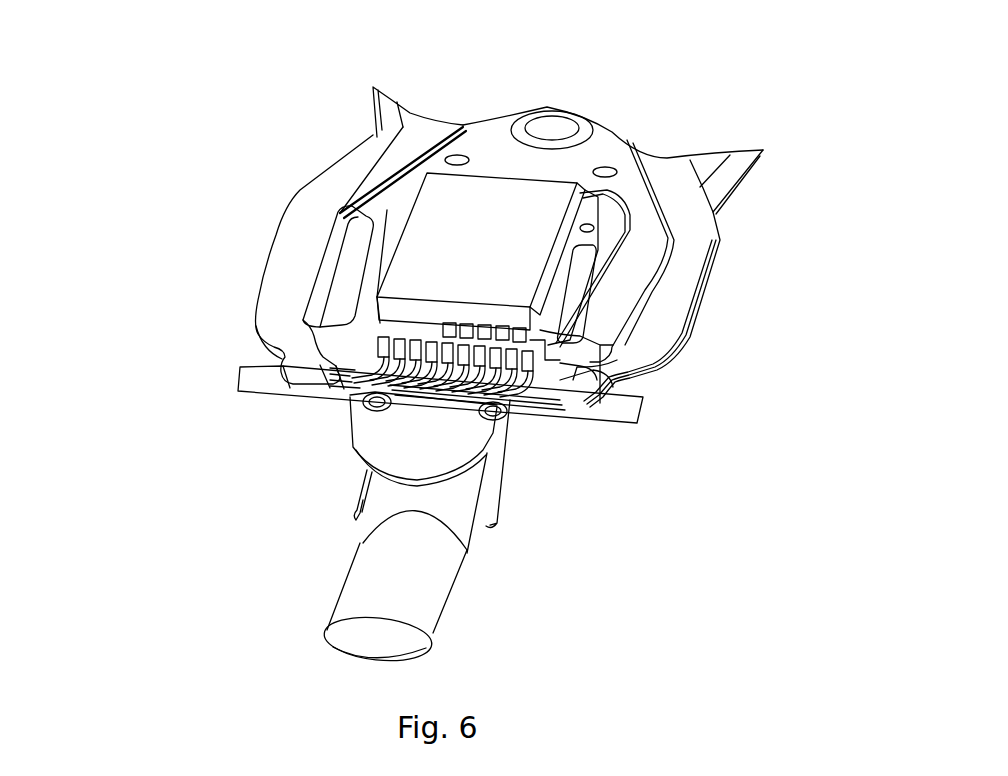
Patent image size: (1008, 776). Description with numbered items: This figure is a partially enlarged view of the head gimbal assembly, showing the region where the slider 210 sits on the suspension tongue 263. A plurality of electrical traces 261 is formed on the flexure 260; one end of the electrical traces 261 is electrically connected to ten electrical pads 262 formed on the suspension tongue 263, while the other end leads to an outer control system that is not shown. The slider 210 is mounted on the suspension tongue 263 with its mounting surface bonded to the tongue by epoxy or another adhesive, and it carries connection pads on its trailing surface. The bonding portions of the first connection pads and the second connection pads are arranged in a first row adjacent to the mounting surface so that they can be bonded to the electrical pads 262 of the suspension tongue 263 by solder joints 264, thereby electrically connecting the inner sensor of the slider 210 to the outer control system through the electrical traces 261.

The slider 210 is at (445, 258).
The flexure 260 is at (467, 143).
The electrical traces 261 is at (356, 380).
The electrical pads 262 is at (515, 376).
The suspension tongue 263 is at (560, 302).
The solder joints 264 is at (377, 350).